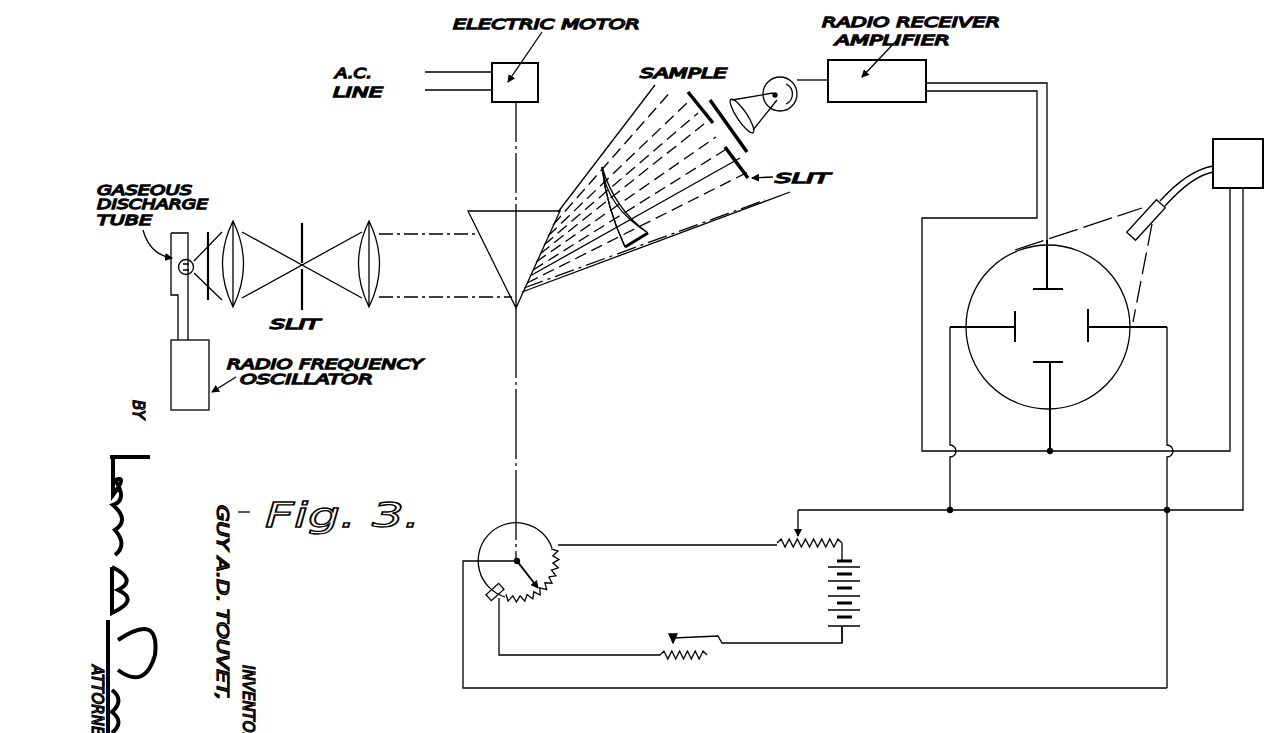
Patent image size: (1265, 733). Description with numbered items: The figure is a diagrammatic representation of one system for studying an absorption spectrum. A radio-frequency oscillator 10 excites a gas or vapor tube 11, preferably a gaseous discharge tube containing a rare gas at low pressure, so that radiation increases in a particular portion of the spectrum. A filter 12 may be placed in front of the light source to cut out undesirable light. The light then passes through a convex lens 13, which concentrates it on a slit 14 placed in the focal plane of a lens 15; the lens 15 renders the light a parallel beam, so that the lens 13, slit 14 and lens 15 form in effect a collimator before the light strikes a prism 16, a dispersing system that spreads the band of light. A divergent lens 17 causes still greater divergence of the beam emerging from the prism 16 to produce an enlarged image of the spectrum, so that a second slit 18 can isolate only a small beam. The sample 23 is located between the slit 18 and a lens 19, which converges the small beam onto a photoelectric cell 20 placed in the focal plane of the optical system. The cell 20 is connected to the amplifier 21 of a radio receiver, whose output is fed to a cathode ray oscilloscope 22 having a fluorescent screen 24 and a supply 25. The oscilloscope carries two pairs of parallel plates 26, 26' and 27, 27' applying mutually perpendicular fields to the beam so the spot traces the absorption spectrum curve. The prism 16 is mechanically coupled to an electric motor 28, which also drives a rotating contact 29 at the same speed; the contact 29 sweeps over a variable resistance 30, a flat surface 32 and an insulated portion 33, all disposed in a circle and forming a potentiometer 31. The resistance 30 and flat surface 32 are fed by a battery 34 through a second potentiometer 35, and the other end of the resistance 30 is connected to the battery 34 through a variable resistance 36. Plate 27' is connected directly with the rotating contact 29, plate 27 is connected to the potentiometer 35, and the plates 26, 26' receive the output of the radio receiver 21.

The radio-frequency oscillator 10 is at (172, 364).
The gas or vapor tube 11 is at (179, 271).
The filter 12 is at (211, 232).
The convex lens 13 is at (243, 303).
The slit 14 is at (305, 303).
The lens 15 is at (379, 304).
The prism 16 is at (520, 309).
The divergent lens 17 is at (593, 180).
The second slit 18 is at (736, 180).
The lens 19 is at (752, 130).
The photoelectric cell 20 is at (782, 80).
The amplifier 21 is at (892, 95).
The cathode ray oscilloscope 22 is at (1143, 272).
The sample 23 is at (752, 150).
The screen 24 is at (1073, 395).
The supply 25 is at (1222, 152).
The plate 26 is at (1050, 278).
The plate 26' is at (1028, 406).
The plate 27 is at (982, 402).
The plate 27' is at (1140, 494).
The electric motor 28 is at (538, 88).
The rotating contact 29 is at (552, 548).
The variable resistance 30 is at (548, 588).
The potentiometer 31 is at (548, 568).
The flat surface 32 is at (532, 535).
The insulated portion 33 is at (487, 591).
The battery 34 is at (853, 586).
The second potentiometer 35 is at (800, 546).
The variable resistance 36 is at (697, 658).